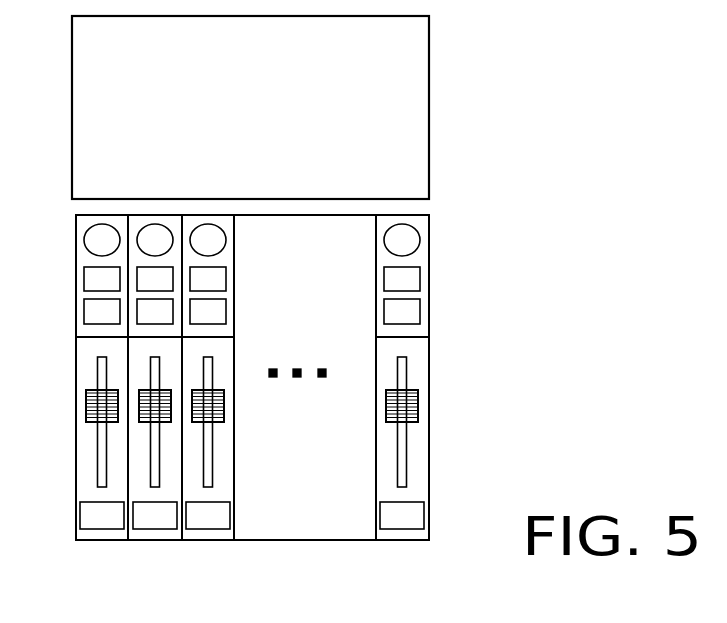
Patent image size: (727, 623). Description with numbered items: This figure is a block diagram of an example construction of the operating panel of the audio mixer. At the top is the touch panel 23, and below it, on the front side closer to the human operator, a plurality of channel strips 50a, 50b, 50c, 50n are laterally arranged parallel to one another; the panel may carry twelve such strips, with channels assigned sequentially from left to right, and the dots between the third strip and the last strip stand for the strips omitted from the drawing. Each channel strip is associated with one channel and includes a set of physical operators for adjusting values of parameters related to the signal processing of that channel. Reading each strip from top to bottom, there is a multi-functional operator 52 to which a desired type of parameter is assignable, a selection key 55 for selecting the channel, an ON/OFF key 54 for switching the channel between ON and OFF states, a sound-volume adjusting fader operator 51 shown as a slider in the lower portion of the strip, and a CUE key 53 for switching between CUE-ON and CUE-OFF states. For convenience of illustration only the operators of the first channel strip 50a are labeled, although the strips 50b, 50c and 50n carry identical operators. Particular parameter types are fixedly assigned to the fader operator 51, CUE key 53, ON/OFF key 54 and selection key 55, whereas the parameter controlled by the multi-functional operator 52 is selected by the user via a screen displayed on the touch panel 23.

The touch panel 23 is at (430, 101).
The channel strip 50a is at (69, 413).
The channel strip 50b is at (152, 540).
The channel strip 50c is at (210, 540).
The channel strip 50n is at (400, 540).
The fader operator 51 is at (86, 410).
The multi-functional operator 52 is at (85, 244).
The CUE key 53 is at (80, 515).
The ON/OFF key 54 is at (84, 315).
The selection key 55 is at (84, 287).